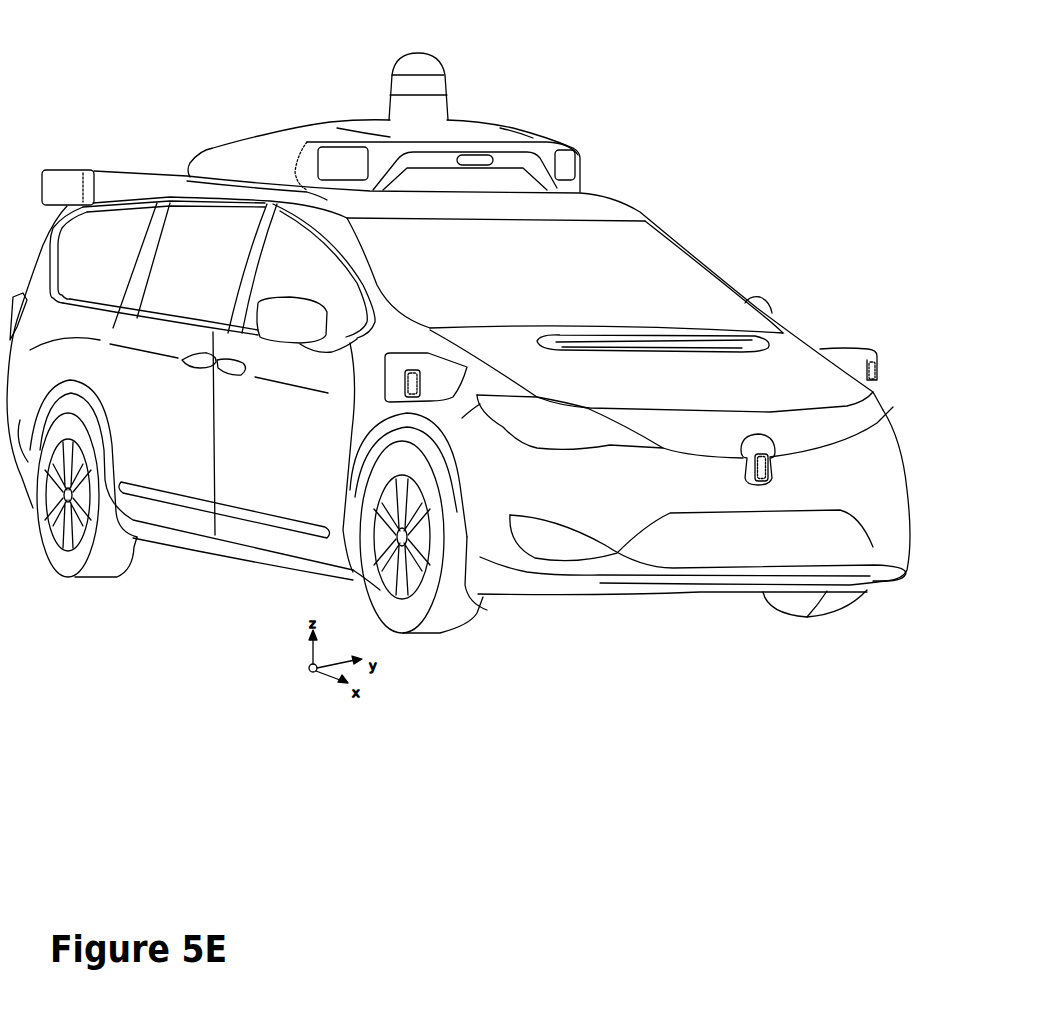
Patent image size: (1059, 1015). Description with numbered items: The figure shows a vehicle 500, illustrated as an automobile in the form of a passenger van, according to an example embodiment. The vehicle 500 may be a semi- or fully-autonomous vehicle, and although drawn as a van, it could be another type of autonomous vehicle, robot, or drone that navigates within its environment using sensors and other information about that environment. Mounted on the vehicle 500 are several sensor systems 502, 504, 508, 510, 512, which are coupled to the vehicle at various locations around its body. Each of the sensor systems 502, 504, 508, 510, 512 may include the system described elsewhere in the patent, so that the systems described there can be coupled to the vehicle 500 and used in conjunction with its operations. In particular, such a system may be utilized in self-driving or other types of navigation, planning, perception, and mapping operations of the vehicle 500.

The vehicle 500 is at (465, 329).
The sensor system 502 is at (438, 55).
The sensor system 504 is at (760, 484).
The sensor system 508 is at (407, 393).
The sensor system 510 is at (878, 381).
The sensor system 512 is at (488, 155).